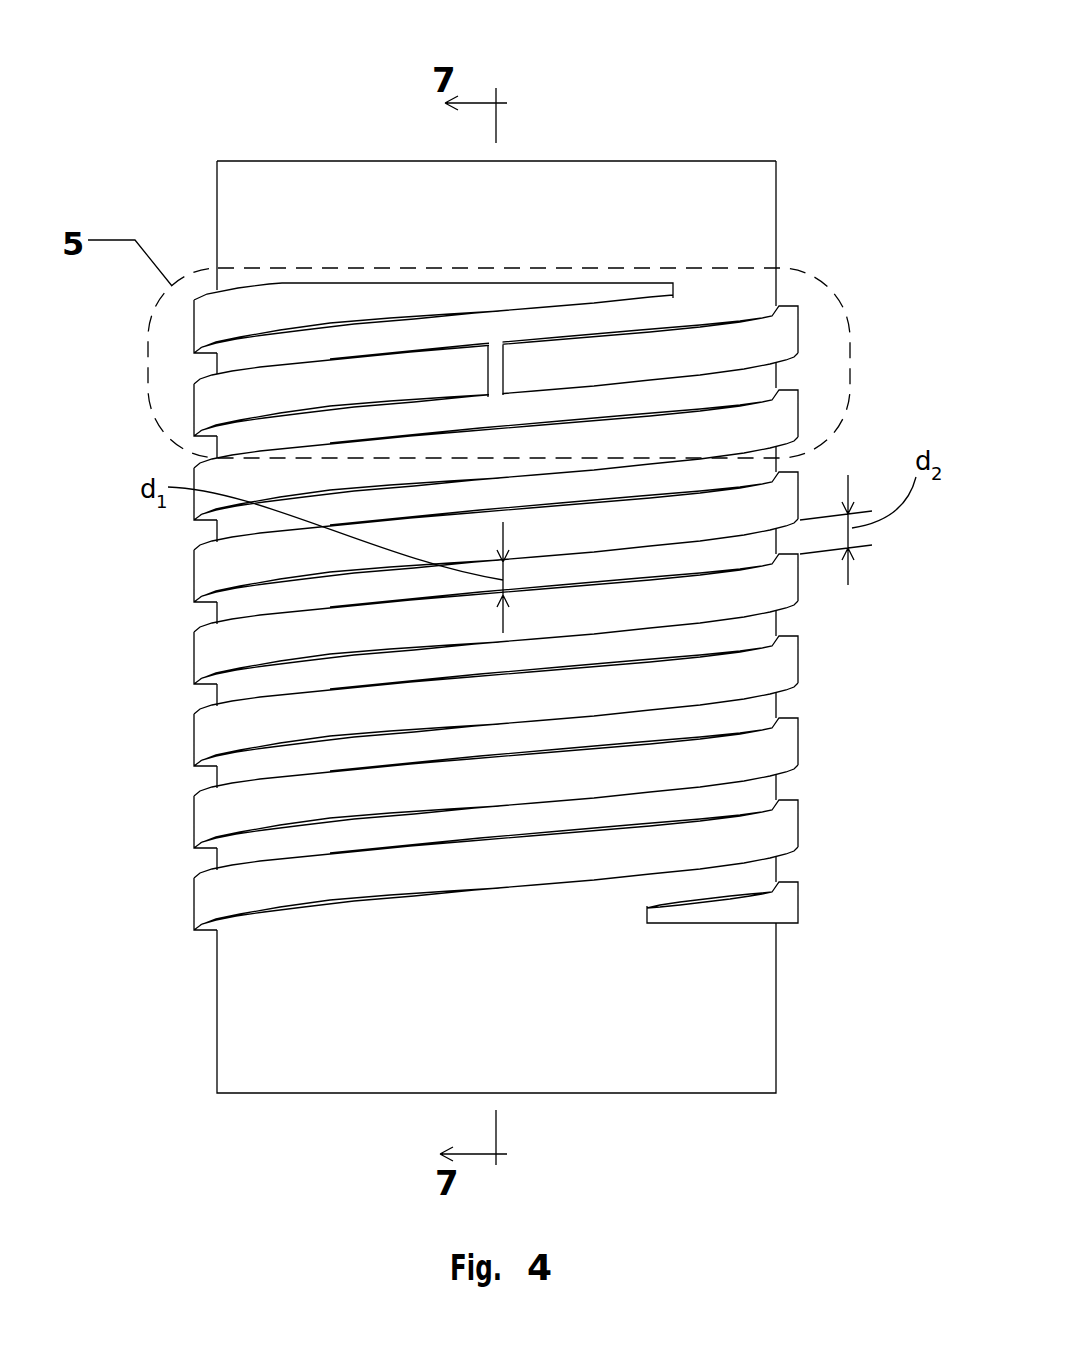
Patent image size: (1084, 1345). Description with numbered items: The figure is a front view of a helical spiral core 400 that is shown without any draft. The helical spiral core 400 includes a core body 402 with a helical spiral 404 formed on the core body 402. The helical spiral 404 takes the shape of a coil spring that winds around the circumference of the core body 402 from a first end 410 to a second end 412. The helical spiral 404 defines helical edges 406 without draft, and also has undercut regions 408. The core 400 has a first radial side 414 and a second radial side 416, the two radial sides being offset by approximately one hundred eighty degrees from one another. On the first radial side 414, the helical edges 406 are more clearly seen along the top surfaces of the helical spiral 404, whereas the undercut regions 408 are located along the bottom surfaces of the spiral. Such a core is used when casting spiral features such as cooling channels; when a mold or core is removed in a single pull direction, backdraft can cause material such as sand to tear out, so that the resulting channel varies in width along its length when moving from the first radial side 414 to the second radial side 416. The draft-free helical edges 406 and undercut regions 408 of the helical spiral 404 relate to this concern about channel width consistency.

The helical spiral core 400 is at (882, 106).
The core body 402 is at (748, 220).
The helical spiral 404 is at (778, 585).
The helical edges 406 is at (787, 298).
The undercut regions 408 is at (200, 295).
The first end 410 is at (347, 145).
The second end 412 is at (641, 1105).
The first radial side 414 is at (792, 182).
The second radial side 416 is at (182, 648).